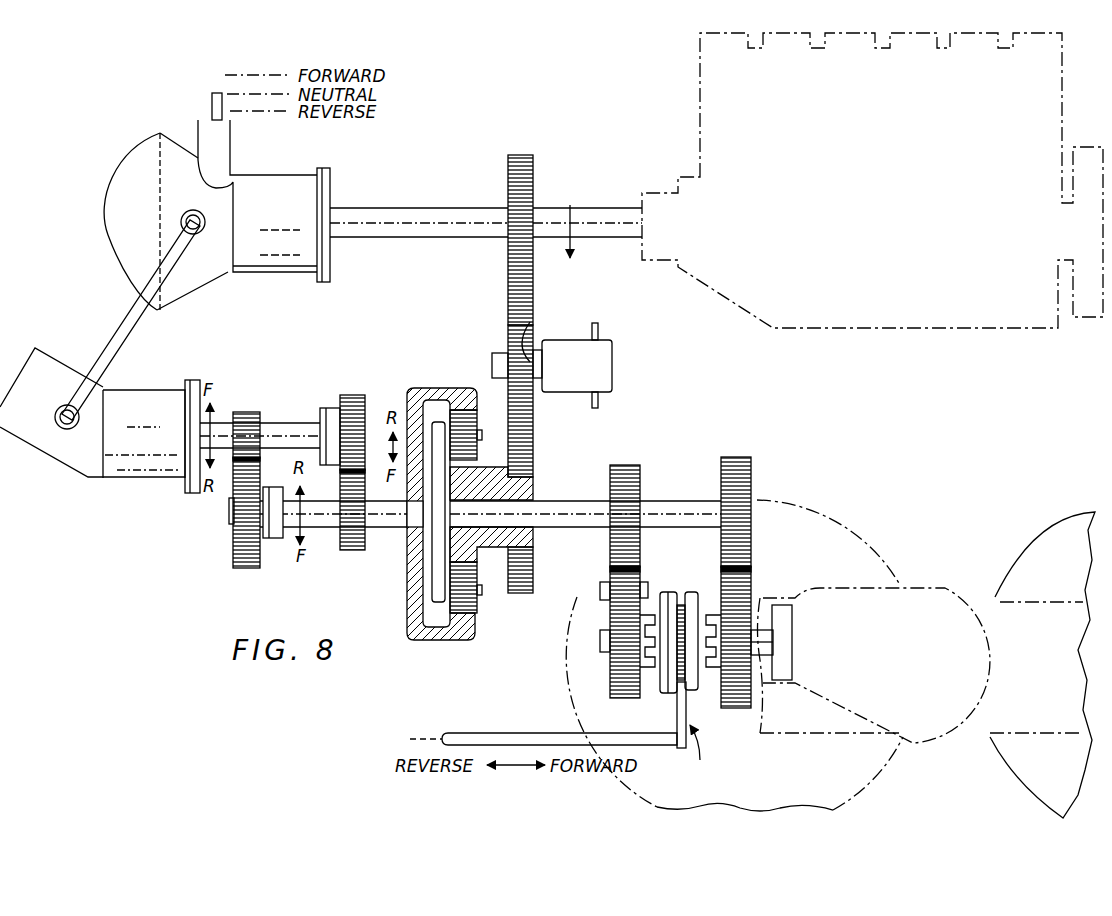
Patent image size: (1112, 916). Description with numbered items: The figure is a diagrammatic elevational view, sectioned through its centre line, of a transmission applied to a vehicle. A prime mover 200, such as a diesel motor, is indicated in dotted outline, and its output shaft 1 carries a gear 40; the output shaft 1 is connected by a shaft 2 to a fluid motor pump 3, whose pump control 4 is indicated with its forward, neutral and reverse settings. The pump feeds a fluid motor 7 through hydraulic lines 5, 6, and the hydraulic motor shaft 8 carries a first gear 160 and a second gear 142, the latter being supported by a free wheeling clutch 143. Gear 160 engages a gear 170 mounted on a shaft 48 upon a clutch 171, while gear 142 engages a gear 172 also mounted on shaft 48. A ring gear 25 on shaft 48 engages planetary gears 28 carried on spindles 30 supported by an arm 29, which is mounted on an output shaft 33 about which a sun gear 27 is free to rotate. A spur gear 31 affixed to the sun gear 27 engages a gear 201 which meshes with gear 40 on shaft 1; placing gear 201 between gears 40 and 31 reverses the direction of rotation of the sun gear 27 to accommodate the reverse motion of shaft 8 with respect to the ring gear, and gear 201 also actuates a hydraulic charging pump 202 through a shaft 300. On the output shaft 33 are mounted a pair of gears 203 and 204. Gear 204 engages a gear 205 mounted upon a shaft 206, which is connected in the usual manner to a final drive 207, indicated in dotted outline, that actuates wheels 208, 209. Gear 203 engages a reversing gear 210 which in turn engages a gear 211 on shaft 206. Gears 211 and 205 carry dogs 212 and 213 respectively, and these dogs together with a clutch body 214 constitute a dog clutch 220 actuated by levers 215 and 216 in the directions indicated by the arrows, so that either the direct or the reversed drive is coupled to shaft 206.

The output shaft 1 is at (597, 208).
The shaft 2 is at (410, 212).
The fluid motor pump 3 is at (130, 172).
The pump control 4 is at (212, 108).
The hydraulic line 5 is at (127, 324).
The hydraulic line 6 is at (118, 336).
The fluid motor 7 is at (133, 468).
The hydraulic motor shaft 8 is at (222, 428).
The ring gear 25 is at (425, 388).
The sun gear 27 is at (465, 480).
The planetary gears 28 is at (465, 605).
The arm 29 is at (432, 600).
The spindles 30 is at (478, 436).
The spur gear 31 is at (527, 455).
The output shaft 33 is at (570, 522).
The gear 40 is at (530, 158).
The shaft 48 is at (388, 520).
The second gear 142 is at (355, 400).
The free wheeling clutch 143 is at (330, 418).
The first gear 160 is at (245, 420).
The gear 170 is at (236, 560).
The clutch 171 is at (270, 530).
The gear 172 is at (350, 540).
The prime mover 200 is at (906, 160).
The gear 201 is at (514, 332).
The hydraulic charging pump 202 is at (605, 355).
The gear 203 is at (625, 465).
The gear 204 is at (740, 458).
The gear 205 is at (737, 600).
The shaft 206 is at (768, 655).
The final drive 207 is at (910, 588).
The wheel 208 is at (838, 530).
The wheel 209 is at (1040, 540).
The reversing gear 210 is at (630, 578).
The gear 211 is at (620, 688).
The dog 212 is at (648, 612).
The dog 213 is at (712, 620).
The clutch body 214 is at (695, 690).
The lever 215 is at (678, 715).
The lever 216 is at (487, 733).
The dog clutch 220 is at (705, 753).
The shaft 300 is at (530, 345).